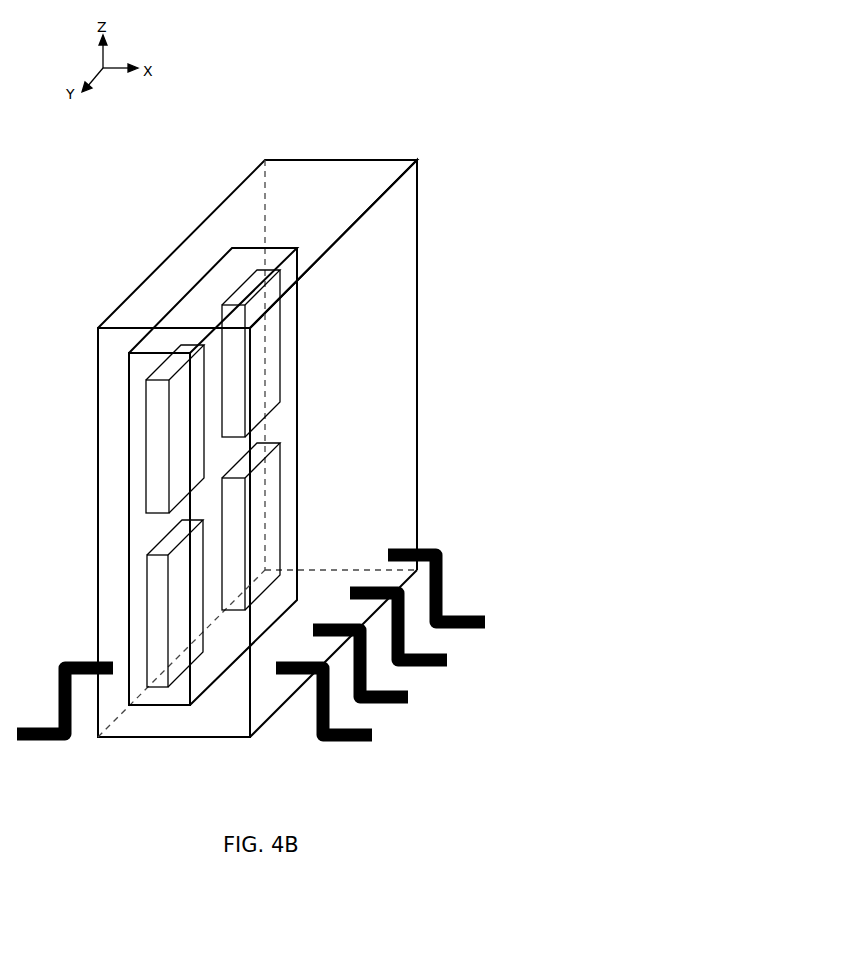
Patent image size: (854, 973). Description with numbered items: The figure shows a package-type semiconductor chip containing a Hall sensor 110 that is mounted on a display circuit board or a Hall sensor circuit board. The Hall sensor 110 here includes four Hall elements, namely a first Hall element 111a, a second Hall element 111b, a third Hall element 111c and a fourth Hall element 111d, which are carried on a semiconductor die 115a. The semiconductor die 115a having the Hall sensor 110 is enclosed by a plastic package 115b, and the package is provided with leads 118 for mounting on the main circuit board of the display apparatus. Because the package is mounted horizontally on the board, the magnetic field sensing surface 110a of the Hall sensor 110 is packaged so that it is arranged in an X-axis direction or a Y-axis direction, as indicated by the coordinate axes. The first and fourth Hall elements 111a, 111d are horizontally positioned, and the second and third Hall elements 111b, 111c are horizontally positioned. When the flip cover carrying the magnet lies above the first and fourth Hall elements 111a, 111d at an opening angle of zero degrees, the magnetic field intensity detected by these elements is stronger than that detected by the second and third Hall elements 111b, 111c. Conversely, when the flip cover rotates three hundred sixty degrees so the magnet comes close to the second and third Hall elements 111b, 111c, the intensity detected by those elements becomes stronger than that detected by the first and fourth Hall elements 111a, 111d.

The Hall sensor 110 is at (308, 407).
The magnetic field sensing surface 110a is at (169, 518).
The first Hall element 111a is at (147, 443).
The second Hall element 111b is at (147, 618).
The third Hall element 111c is at (262, 593).
The fourth Hall element 111d is at (240, 287).
The semiconductor die 115a is at (222, 282).
The plastic package 115b is at (417, 365).
The lead 118 is at (498, 598).